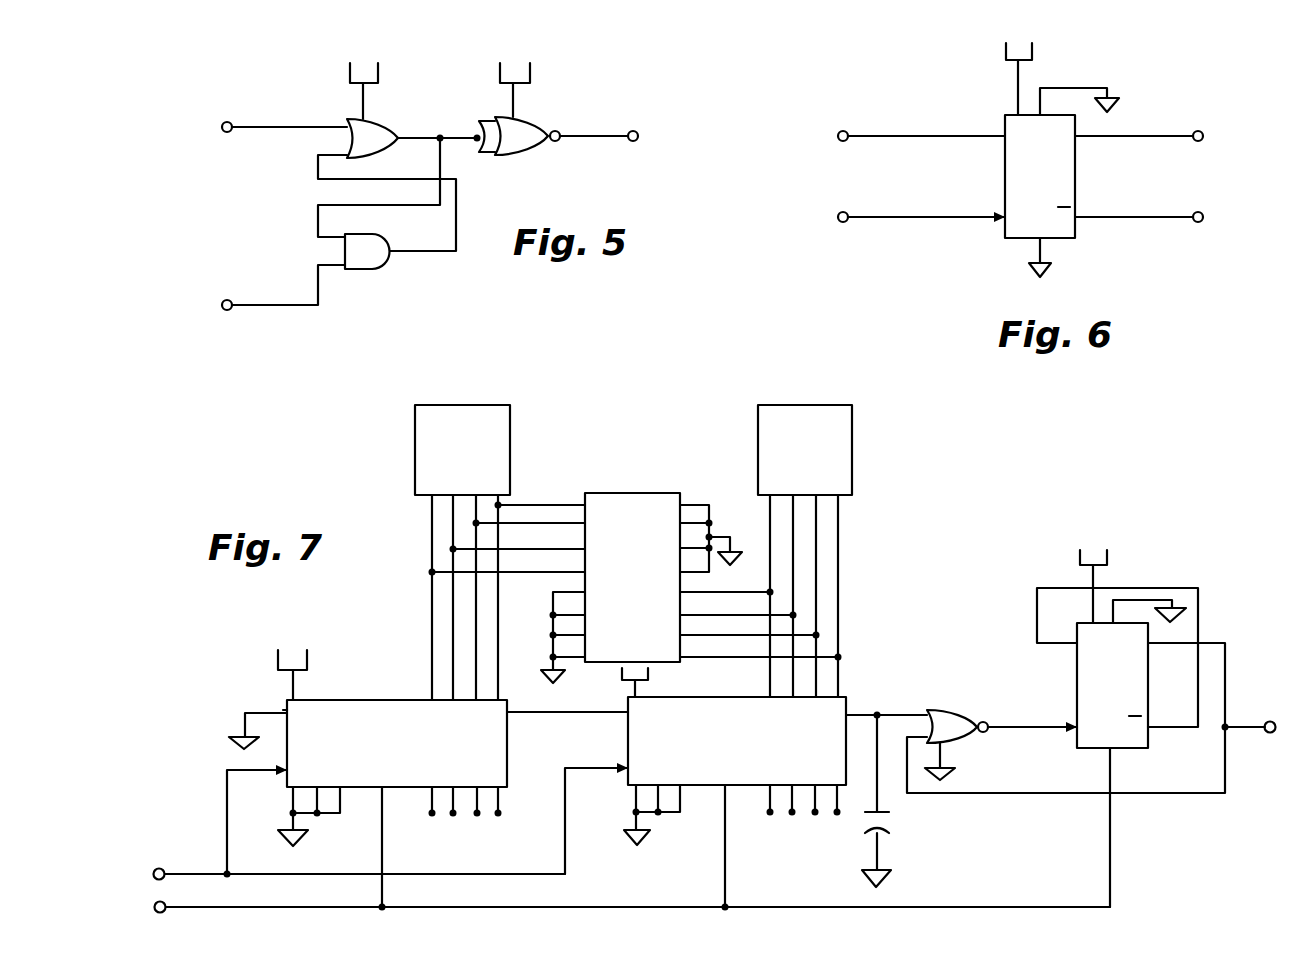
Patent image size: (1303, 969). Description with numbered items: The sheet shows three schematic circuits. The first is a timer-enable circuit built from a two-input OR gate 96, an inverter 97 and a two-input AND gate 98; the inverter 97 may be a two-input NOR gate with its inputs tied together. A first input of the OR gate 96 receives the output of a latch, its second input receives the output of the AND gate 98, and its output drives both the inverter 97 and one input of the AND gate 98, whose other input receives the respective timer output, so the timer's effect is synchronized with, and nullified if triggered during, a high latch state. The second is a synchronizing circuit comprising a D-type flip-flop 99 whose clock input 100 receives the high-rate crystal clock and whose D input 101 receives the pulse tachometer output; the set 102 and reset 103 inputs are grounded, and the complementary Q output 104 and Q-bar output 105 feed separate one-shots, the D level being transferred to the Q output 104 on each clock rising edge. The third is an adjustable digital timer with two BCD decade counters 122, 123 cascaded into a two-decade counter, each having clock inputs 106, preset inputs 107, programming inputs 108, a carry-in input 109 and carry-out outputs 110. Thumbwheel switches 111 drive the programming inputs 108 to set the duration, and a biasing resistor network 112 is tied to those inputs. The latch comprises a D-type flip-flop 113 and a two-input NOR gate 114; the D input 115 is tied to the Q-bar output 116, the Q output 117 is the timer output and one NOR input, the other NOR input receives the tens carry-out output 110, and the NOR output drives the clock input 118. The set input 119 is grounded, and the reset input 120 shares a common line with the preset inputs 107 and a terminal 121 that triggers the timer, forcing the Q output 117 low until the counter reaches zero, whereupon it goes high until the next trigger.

In FIG. 5, the two-input OR gate 96 is at (382, 135).
In FIG. 5, the inverter 97 is at (525, 130).
In FIG. 5, the two-input AND gate 98 is at (378, 270).
In FIG. 6, the D-type flip-flop 99 is at (1065, 185).
In FIG. 6, the clock input 100 is at (1003, 220).
In FIG. 6, the D input 101 is at (1003, 138).
In FIG. 6, the set input 102 is at (1043, 110).
In FIG. 6, the reset input 103 is at (1045, 245).
In FIG. 6, the Q output 104 is at (1077, 135).
In FIG. 6, the Q-bar output 105 is at (1077, 215).
In FIG. 7, the clock inputs 106 is at (283, 773).
In FIG. 7, the preset inputs 107 is at (387, 793).
In FIG. 7, the programming inputs 108 is at (500, 692).
In FIG. 7, the carry-in input 109 is at (283, 710).
In FIG. 7, the carry-out output 110 is at (508, 709).
In FIG. 7, the thumbwheel switches 111 is at (500, 455).
In FIG. 7, the biasing resistor network 112 is at (642, 510).
In FIG. 7, the D-type flip-flop 113 is at (1083, 682).
In FIG. 7, the two-input NOR gate 114 is at (950, 715).
In FIG. 7, the D input 115 is at (1073, 647).
In FIG. 7, the Q-bar output 116 is at (1150, 732).
In FIG. 7, the Q output 117 is at (1152, 648).
In FIG. 7, the clock input 118 is at (1073, 732).
In FIG. 7, the set input 119 is at (1115, 620).
In FIG. 7, the reset input 120 is at (1108, 753).
In FIG. 7, the terminal 121 is at (177, 912).
In FIG. 7, the units BCD decade counter 122 is at (377, 713).
In FIG. 7, the tens BCD decade counter 123 is at (712, 713).